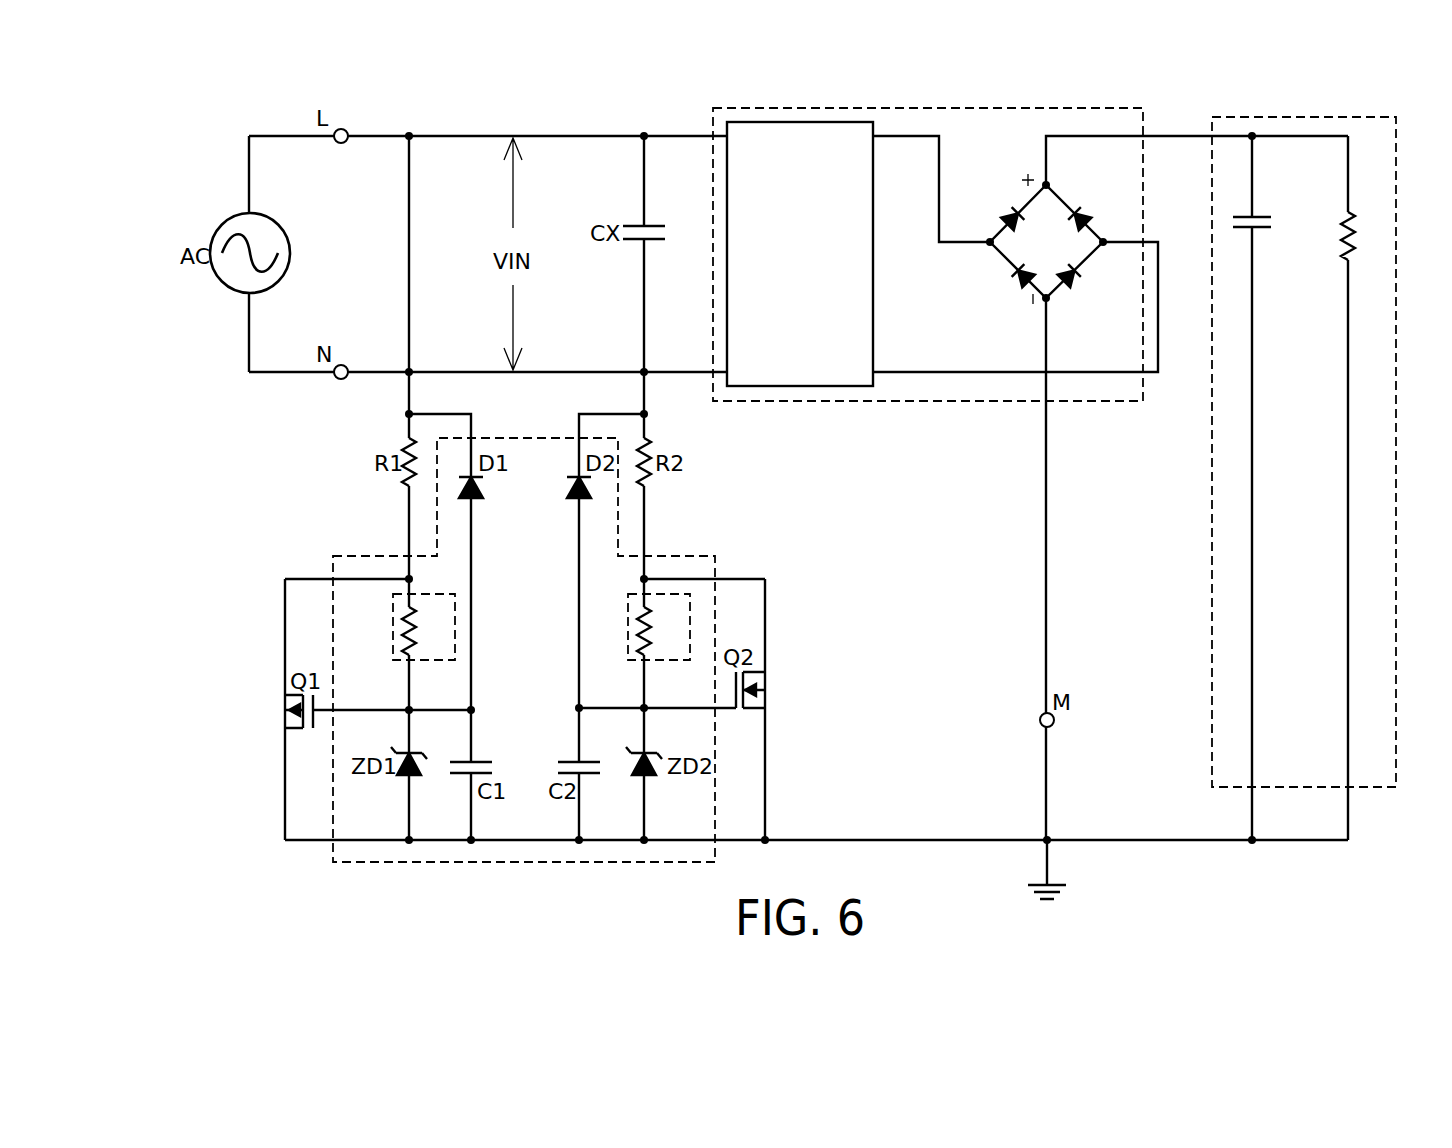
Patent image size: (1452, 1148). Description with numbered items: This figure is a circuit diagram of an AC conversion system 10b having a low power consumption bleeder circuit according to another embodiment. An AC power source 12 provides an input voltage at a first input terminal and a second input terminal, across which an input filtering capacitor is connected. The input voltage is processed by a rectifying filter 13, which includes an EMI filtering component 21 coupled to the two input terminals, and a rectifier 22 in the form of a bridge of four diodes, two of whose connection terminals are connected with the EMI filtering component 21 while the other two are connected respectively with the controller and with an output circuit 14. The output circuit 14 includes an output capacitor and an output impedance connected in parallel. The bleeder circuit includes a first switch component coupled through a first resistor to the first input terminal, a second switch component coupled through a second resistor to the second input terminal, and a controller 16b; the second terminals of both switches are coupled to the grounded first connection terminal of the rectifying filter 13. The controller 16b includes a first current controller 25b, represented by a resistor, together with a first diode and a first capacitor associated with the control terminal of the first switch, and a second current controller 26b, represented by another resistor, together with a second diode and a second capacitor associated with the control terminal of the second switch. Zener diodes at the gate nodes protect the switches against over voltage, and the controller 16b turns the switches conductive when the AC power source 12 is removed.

The AC conversion system 10b is at (208, 108).
The AC power source 12 is at (237, 222).
The rectifying filter 13 is at (1030, 464).
The output circuit 14 is at (1396, 170).
The controller 16b is at (390, 864).
The EMI filtering component 21 is at (752, 122).
The rectifier 22 is at (1022, 195).
The first current controller 25b is at (456, 645).
The second current controller 26b is at (626, 630).